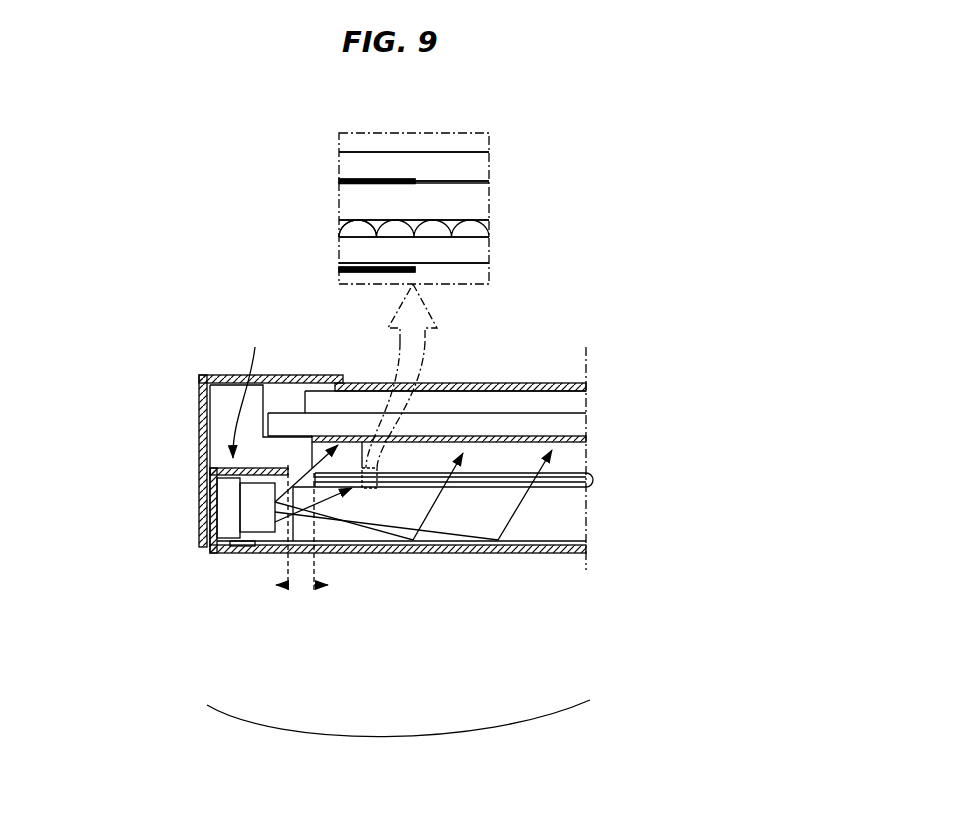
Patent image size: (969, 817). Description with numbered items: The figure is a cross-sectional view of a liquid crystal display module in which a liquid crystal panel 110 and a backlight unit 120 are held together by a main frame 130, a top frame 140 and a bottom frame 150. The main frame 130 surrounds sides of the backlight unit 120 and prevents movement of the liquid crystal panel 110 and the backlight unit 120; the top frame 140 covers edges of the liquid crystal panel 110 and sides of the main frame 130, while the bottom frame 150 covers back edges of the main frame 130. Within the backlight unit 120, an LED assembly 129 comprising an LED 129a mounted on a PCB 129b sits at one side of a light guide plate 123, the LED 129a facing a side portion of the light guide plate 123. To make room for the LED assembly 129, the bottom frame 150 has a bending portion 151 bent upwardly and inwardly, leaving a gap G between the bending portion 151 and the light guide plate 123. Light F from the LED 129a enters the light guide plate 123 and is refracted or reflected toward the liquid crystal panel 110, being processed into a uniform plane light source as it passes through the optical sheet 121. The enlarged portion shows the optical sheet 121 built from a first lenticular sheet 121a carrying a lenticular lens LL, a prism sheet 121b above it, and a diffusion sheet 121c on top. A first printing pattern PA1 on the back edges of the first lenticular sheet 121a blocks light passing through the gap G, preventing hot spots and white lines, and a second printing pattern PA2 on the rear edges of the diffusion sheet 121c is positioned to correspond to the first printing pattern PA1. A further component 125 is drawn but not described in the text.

The liquid crystal panel 110 is at (588, 398).
The backlight unit 120 is at (398, 736).
The optical sheet 121 is at (590, 480).
The first lenticular sheet 121a is at (472, 248).
The prism sheet 121b is at (477, 200).
The diffusion sheet 121c is at (477, 162).
The light guide plate 123 is at (370, 523).
The bottom plate 125 is at (518, 551).
The LED assembly 129 is at (225, 591).
The LED 129a is at (257, 505).
The PCB 129b is at (228, 517).
The main frame 130 is at (223, 417).
The top frame 140 is at (217, 380).
The bottom frame 150 is at (560, 554).
The bending portion 151 is at (255, 393).
The light F is at (320, 505).
The gap G is at (302, 538).
The first printing pattern PA1 is at (338, 270).
The second printing pattern PA2 is at (340, 182).
The lenticular lens LL is at (357, 229).